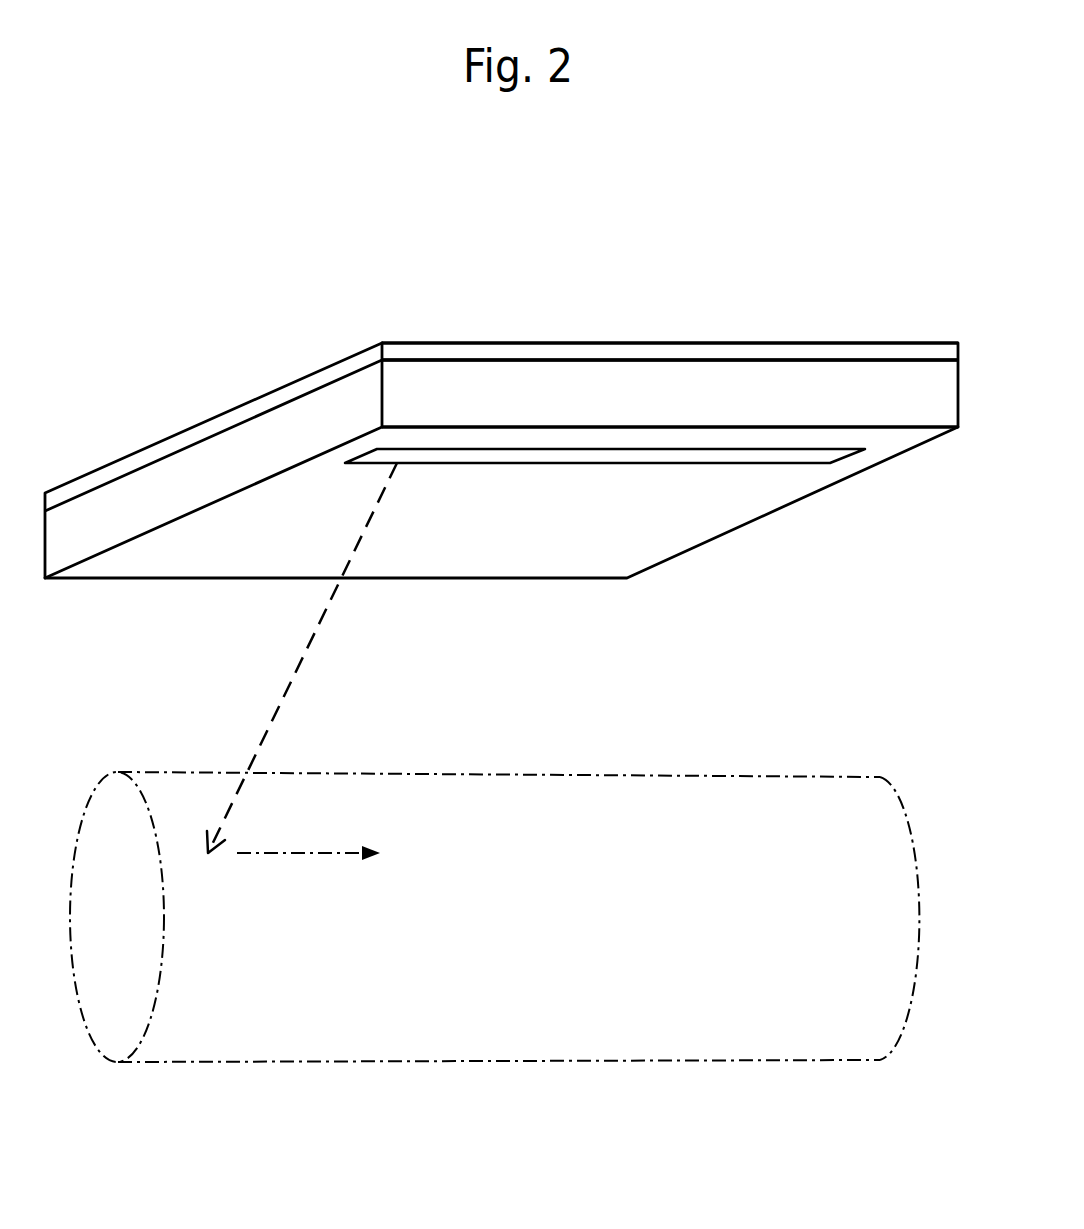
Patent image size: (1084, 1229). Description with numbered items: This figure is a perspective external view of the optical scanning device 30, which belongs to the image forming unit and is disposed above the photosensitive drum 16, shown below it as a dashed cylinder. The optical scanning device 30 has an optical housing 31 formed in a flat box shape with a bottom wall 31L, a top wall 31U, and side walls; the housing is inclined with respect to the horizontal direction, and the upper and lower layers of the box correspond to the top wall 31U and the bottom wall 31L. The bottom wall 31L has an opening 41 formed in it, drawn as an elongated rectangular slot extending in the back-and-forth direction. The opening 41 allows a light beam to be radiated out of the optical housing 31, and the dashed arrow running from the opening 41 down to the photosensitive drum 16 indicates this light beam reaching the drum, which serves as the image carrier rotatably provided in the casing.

The photosensitive drum 16 is at (677, 773).
The optical scanning device 30 is at (240, 393).
The optical housing 31 is at (868, 342).
The top wall 31U is at (663, 353).
The bottom wall 31L is at (888, 440).
The opening 41 is at (790, 455).